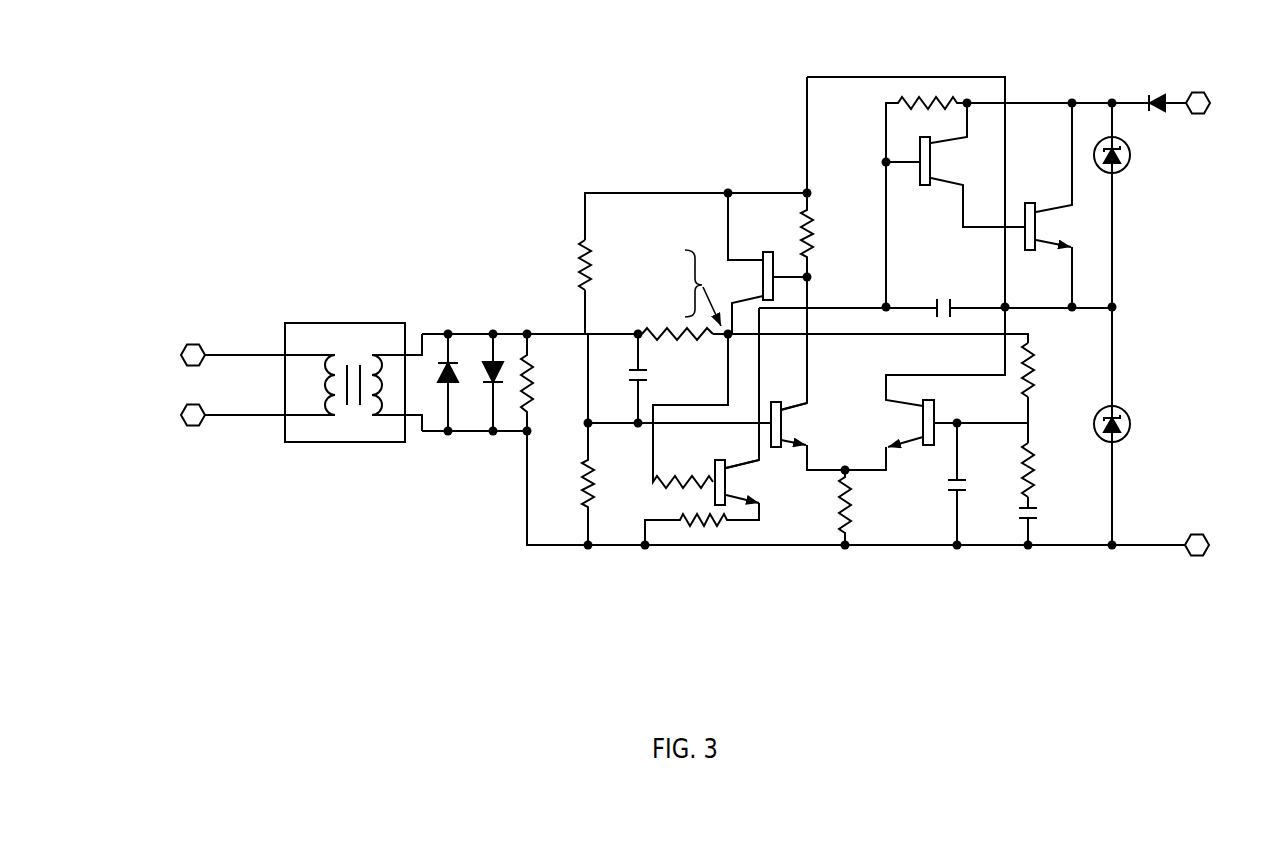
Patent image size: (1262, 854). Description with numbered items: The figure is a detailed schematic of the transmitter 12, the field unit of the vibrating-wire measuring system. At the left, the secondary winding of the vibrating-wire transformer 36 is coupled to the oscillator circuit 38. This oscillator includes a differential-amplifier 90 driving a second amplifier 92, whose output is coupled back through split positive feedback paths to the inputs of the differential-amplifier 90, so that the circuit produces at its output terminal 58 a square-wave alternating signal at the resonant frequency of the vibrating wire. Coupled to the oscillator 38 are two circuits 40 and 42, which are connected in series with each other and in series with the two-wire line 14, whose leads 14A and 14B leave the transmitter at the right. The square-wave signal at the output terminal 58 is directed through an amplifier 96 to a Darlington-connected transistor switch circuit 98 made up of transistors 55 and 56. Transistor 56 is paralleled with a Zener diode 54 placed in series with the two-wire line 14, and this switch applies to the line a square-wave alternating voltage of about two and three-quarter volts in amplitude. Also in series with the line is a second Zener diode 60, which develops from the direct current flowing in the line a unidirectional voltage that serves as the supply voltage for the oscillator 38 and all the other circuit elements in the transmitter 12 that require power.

The transmitter 12 is at (717, 380).
The two-wire line 14 is at (1208, 320).
The lead 14A is at (1169, 96).
The lead 14B is at (1186, 566).
The vibrating-wire transformer 36 is at (352, 320).
The oscillator 38 is at (580, 330).
The circuit 40 is at (1147, 212).
The circuit 42 is at (1146, 424).
The Zener diode 54 is at (1121, 172).
The transistor 55 is at (936, 145).
The transistor 56 is at (1040, 234).
The output terminal 58 is at (723, 338).
The second Zener diode 60 is at (1121, 444).
The differential-amplifier 90 is at (828, 436).
The second amplifier 92 is at (754, 279).
The amplifier 96 is at (711, 469).
The Darlington-connected transistor switch circuit 98 is at (1037, 95).